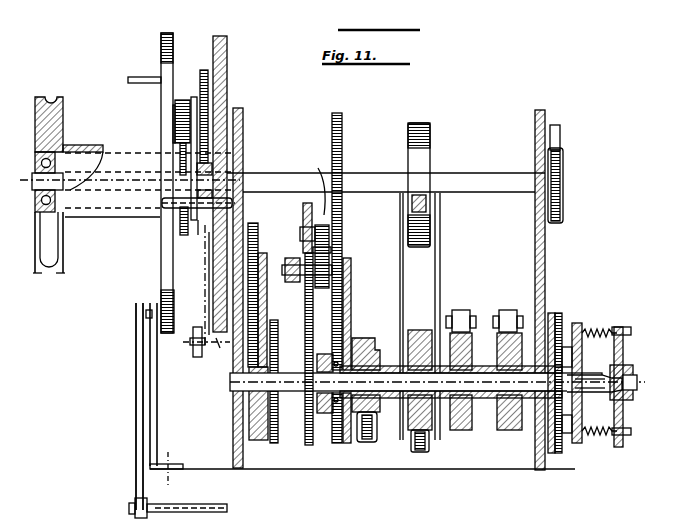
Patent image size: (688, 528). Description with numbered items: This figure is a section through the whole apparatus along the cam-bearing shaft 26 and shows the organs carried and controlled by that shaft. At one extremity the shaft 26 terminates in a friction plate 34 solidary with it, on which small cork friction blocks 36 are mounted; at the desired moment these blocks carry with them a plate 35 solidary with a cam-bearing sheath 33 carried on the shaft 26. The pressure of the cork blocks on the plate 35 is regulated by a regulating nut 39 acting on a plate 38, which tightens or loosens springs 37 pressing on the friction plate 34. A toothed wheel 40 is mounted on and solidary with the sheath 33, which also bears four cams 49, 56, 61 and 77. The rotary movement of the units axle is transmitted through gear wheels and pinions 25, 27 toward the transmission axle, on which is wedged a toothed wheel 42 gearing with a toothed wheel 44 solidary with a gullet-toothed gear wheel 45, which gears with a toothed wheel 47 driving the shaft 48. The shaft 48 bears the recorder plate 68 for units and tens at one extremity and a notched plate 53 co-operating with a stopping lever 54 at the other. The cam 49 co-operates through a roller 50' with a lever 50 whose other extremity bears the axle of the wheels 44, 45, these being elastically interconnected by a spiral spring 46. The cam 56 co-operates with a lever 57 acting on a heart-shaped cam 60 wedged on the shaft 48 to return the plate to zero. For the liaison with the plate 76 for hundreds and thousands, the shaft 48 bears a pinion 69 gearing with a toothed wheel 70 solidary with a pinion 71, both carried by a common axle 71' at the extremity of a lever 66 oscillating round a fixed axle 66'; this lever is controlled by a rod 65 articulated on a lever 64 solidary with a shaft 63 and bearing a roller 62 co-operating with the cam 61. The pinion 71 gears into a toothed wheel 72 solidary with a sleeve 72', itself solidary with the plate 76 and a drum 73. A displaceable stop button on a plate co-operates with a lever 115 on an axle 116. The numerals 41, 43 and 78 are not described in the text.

The gear wheel 25 is at (276, 436).
The shaft 26 is at (288, 378).
The gear wheel 27 is at (262, 430).
The cam-bearing sheath 33 is at (490, 400).
The friction plate 34 is at (578, 323).
The plate 35 is at (558, 322).
The friction blocks 36 is at (570, 420).
The springs 37 is at (598, 328).
The plate 38 is at (612, 352).
The regulating nut 39 is at (628, 366).
The toothed wheel 40 is at (562, 450).
The collar 41 is at (330, 414).
The toothed wheel 42 is at (309, 440).
The bolt 43 is at (288, 257).
The toothed wheel 44 is at (303, 208).
The gullet-toothed gear wheel 45 is at (330, 237).
The spiral spring 46 is at (312, 184).
The toothed wheel 47 is at (340, 118).
The shaft 48 is at (478, 163).
The cam 49 is at (364, 338).
The lever 50 is at (355, 360).
The roller 50' is at (372, 437).
The notched plate 53 is at (563, 152).
The stopping lever 54 is at (556, 125).
The cam 56 is at (418, 332).
The lever 57 is at (418, 452).
The heart-shaped cam 60 is at (419, 123).
The cam 61 is at (463, 430).
The roller 62 is at (461, 310).
The shaft 63 is at (212, 355).
The lever 64 is at (194, 355).
The rod 65 is at (205, 282).
The lever 66 is at (190, 138).
The fixed axle 66' is at (174, 201).
The recorder plate 68 is at (220, 36).
The pinion 69 is at (201, 230).
The toothed wheel 70 is at (203, 70).
The pinion 71 is at (181, 125).
The common axle 71' is at (155, 121).
The toothed wheel 72 is at (182, 229).
The sleeve 72' is at (96, 208).
The drum 73 is at (40, 96).
The plate 76 is at (166, 33).
The cam 77 is at (509, 430).
The roller 78 is at (508, 310).
The lever 115 is at (137, 440).
The axle 116 is at (188, 504).